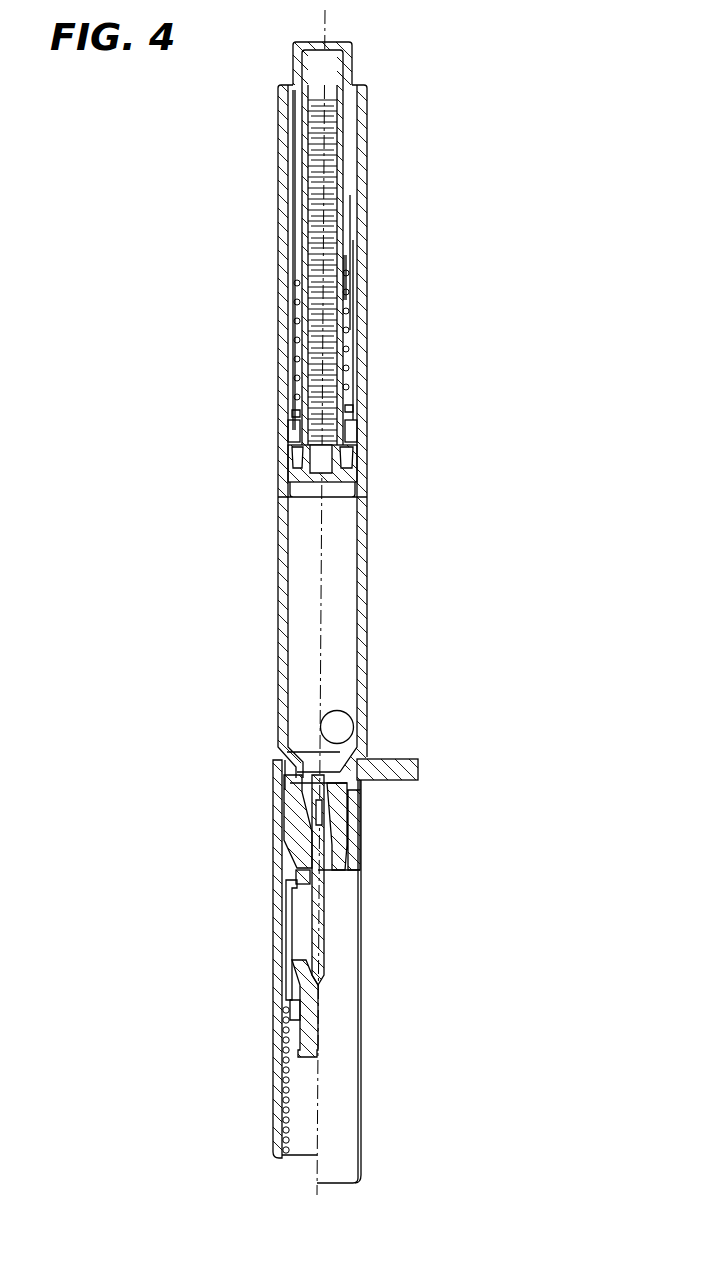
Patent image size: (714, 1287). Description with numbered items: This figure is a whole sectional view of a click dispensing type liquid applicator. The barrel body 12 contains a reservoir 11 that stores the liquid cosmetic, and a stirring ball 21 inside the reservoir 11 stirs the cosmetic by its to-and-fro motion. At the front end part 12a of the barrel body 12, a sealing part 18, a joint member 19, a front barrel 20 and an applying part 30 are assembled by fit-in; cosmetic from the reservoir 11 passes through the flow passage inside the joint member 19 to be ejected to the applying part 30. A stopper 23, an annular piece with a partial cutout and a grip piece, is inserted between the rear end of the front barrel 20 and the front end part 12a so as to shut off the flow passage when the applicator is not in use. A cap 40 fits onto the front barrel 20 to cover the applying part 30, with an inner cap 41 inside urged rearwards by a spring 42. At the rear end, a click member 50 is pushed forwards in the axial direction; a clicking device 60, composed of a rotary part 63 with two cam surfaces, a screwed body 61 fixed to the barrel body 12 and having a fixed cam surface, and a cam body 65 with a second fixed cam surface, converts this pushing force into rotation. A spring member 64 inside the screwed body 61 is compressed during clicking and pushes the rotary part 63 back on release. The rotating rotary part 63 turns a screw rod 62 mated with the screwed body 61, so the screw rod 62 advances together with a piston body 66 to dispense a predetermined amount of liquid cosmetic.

The click member 50 is at (351, 44).
The rotary part 63 is at (338, 122).
The clicking device 60 is at (295, 185).
The screw rod 62 is at (337, 175).
The cam body 65 is at (348, 213).
The screwed body 61 is at (343, 263).
The spring member 64 is at (347, 312).
The barrel body 12 is at (362, 388).
The piston body 66 is at (352, 478).
The reservoir 11 is at (340, 576).
The stirring ball 21 is at (340, 725).
The stopper 23 is at (420, 771).
The front end part 12a is at (298, 790).
The sealing part 18 is at (300, 828).
The joint member 19 is at (297, 878).
The front barrel 20 is at (302, 905).
The inner cap 41 is at (295, 952).
The applying part 30 is at (315, 987).
The spring 42 is at (285, 1094).
The cap 40 is at (350, 1100).